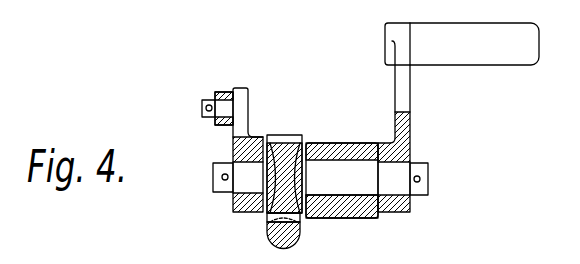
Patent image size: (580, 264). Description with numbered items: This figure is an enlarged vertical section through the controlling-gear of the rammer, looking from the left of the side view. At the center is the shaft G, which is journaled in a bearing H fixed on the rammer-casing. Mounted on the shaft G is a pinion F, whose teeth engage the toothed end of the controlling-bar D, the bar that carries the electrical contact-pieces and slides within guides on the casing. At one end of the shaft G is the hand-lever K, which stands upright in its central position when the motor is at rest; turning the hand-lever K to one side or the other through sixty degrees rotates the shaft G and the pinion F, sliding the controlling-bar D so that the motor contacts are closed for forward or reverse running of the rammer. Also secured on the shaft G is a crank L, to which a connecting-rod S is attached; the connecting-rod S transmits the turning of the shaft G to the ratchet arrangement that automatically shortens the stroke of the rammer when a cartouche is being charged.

The connecting-rod S is at (226, 91).
The crank L is at (246, 108).
The pinion F is at (290, 141).
The shaft G is at (323, 172).
The bearing H is at (362, 214).
The controlling-bar D is at (299, 241).
The hand-lever K is at (408, 97).